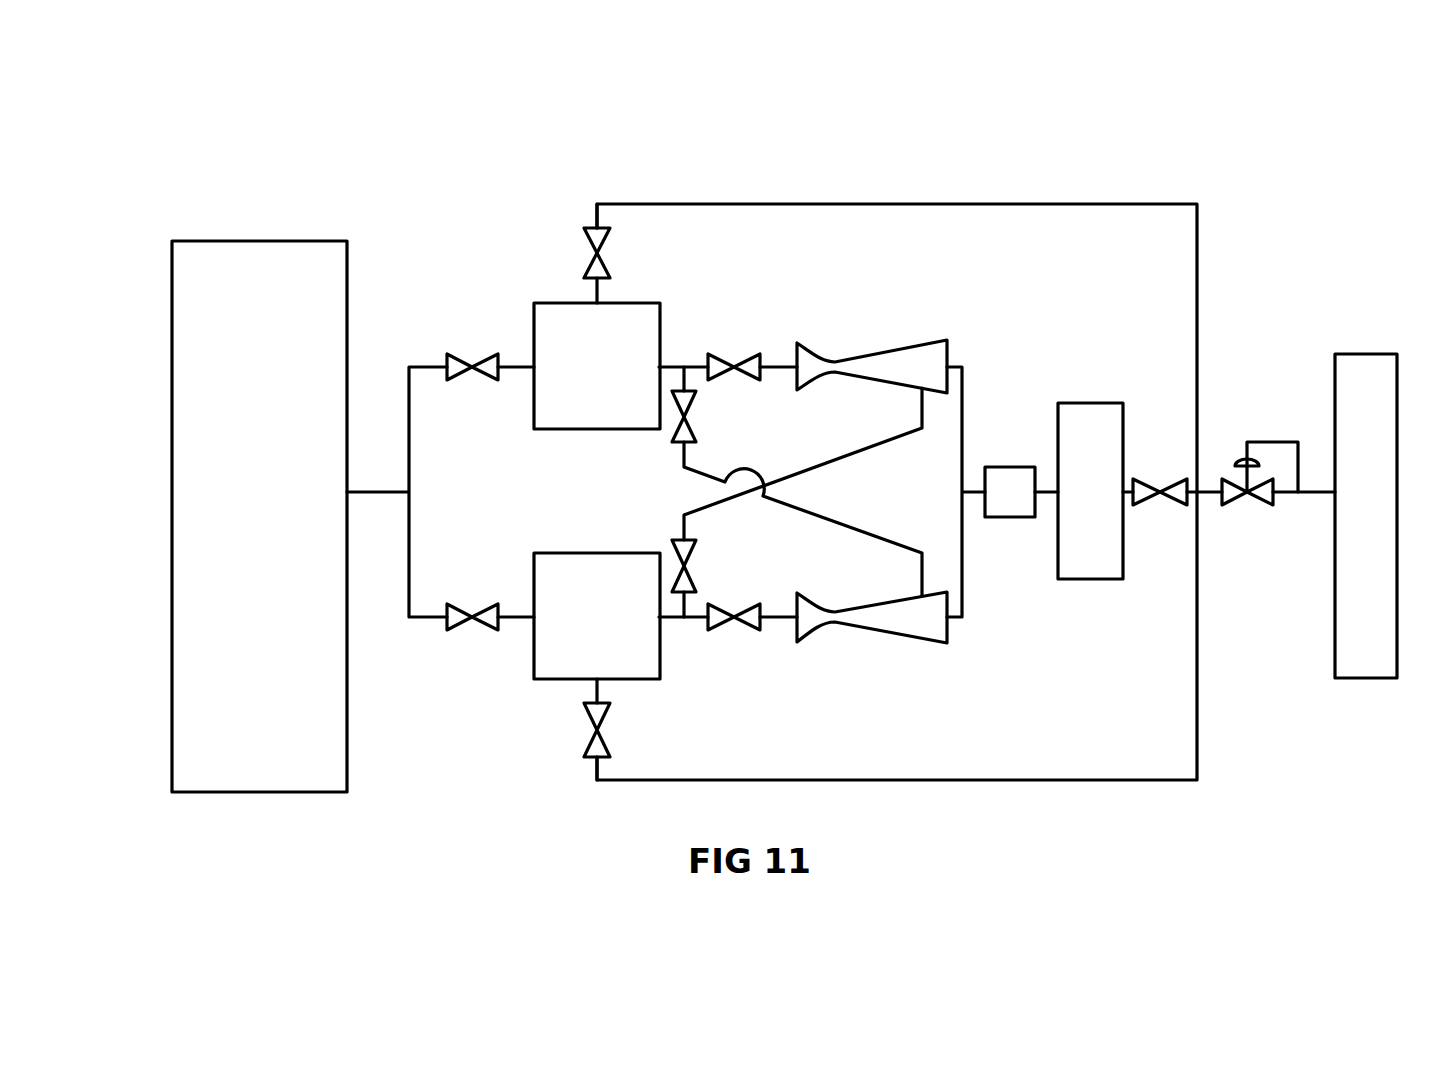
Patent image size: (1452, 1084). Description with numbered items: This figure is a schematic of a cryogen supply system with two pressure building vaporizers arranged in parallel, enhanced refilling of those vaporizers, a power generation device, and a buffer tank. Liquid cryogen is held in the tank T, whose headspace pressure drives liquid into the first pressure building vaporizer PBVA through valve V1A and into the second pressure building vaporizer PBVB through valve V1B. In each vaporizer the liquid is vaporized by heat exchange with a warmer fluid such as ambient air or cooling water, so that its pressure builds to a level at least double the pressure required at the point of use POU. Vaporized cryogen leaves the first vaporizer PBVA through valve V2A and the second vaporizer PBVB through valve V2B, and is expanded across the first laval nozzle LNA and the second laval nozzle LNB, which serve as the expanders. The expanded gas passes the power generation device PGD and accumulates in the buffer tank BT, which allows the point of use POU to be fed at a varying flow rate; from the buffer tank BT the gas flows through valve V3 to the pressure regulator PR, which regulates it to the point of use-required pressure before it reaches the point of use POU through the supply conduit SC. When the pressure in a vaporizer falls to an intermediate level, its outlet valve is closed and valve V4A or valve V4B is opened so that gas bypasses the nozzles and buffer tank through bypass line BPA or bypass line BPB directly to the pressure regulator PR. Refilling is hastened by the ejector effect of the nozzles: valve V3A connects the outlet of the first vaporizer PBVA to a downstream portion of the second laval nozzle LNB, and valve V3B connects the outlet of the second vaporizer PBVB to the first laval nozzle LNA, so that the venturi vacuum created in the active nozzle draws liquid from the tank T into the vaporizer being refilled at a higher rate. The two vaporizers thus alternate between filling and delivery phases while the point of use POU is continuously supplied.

The tank T is at (253, 268).
The first pressure building vaporizer PBVA is at (557, 317).
The second pressure building vaporizer PBVB is at (545, 653).
The valve V1A is at (461, 357).
The valve V1B is at (452, 624).
The valve V2A is at (715, 363).
The valve V2B is at (753, 625).
The valve V3A is at (693, 428).
The valve V3B is at (693, 553).
The valve V4A is at (600, 243).
The valve V4B is at (607, 717).
The valve V3 is at (1153, 493).
The first laval nozzle LNA is at (887, 360).
The second laval nozzle LNB is at (915, 620).
The power generation device PGD is at (1025, 467).
The buffer tank BT is at (1073, 403).
The pressure regulator PR is at (1256, 420).
The supply conduit SC is at (1313, 492).
The point of use POU is at (1355, 383).
The bypass line BPA is at (968, 203).
The bypass line BPB is at (1005, 780).